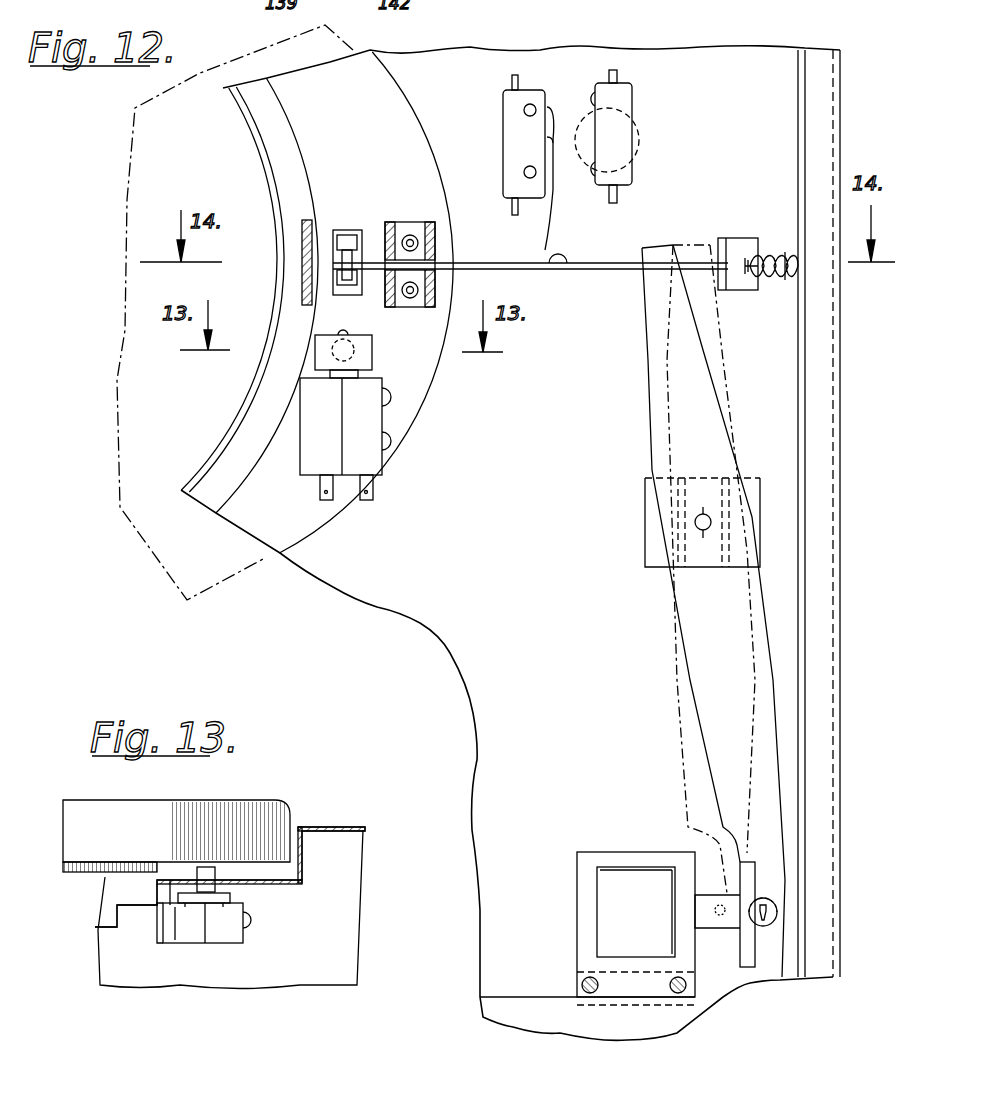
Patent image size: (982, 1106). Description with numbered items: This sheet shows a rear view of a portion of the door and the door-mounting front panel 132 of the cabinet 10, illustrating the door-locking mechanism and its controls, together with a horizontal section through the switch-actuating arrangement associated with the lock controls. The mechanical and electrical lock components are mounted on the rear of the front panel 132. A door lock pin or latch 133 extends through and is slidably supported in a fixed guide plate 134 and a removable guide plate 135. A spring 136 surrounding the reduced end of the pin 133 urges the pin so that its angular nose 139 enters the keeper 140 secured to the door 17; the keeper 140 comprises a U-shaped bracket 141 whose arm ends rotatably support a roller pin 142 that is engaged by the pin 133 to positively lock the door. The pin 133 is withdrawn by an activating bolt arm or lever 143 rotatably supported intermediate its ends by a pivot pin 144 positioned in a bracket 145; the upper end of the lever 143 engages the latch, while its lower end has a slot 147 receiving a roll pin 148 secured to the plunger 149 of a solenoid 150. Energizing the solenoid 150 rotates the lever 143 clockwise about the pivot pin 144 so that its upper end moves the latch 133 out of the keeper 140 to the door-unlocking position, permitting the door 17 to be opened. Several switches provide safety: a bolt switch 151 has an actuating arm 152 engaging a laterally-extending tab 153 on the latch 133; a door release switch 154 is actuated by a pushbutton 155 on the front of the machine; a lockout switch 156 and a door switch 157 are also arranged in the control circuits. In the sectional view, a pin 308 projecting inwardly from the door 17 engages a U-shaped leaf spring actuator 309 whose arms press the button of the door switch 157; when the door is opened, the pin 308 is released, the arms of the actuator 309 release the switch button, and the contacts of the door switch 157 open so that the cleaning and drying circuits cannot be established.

In FIG. 12, the cabinet 10 is at (858, 152).
In FIG. 12, the door 17 is at (112, 392).
In FIG. 13, the door 17 is at (232, 805).
In FIG. 12, the front panel 132 is at (512, 493).
In FIG. 13, the front panel 132 is at (345, 825).
In FIG. 12, the door lock pin 133 is at (622, 272).
In FIG. 12, the fixed guide plate 134 is at (741, 238).
In FIG. 12, the removable guide plate 135 is at (428, 224).
In FIG. 12, the spring 136 is at (782, 274).
In FIG. 12, the angular nose 139 is at (333, 267).
In FIG. 12, the keeper 140 is at (350, 215).
In FIG. 12, the U-shaped bracket 141 is at (355, 235).
In FIG. 12, the roller pin 142 is at (340, 262).
In FIG. 12, the activating bolt arm 143 is at (647, 370).
In FIG. 12, the pivot pin 144 is at (698, 526).
In FIG. 12, the bracket 145 is at (645, 508).
In FIG. 12, the slot 147 is at (765, 930).
In FIG. 12, the roll pin 148 is at (778, 912).
In FIG. 12, the plunger 149 is at (722, 918).
In FIG. 12, the solenoid 150 is at (597, 882).
In FIG. 12, the bolt switch 151 is at (497, 120).
In FIG. 12, the actuating arm 152 is at (543, 238).
In FIG. 12, the tab 153 is at (560, 256).
In FIG. 12, the door release switch 154 is at (640, 100).
In FIG. 12, the pushbutton 155 is at (645, 142).
In FIG. 12, the lockout switch 156 is at (298, 457).
In FIG. 13, the lockout switch 156 is at (187, 935).
In FIG. 12, the door switch 157 is at (386, 418).
In FIG. 13, the door switch 157 is at (240, 937).
In FIG. 12, the pin 308 is at (320, 341).
In FIG. 13, the pin 308 is at (203, 870).
In FIG. 12, the U-shaped leaf spring actuator 309 is at (368, 358).
In FIG. 13, the U-shaped leaf spring actuator 309 is at (227, 890).